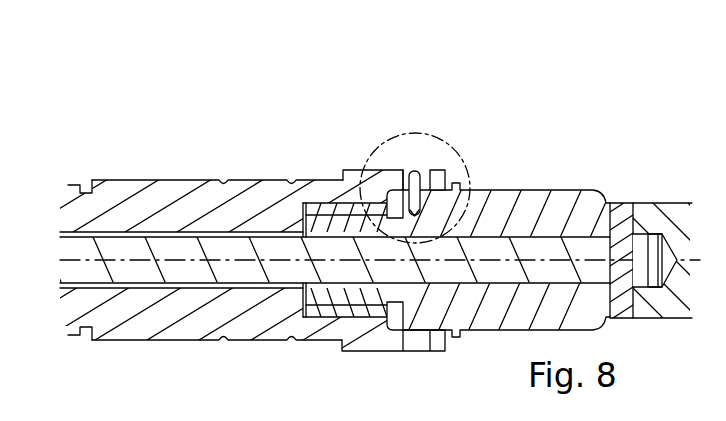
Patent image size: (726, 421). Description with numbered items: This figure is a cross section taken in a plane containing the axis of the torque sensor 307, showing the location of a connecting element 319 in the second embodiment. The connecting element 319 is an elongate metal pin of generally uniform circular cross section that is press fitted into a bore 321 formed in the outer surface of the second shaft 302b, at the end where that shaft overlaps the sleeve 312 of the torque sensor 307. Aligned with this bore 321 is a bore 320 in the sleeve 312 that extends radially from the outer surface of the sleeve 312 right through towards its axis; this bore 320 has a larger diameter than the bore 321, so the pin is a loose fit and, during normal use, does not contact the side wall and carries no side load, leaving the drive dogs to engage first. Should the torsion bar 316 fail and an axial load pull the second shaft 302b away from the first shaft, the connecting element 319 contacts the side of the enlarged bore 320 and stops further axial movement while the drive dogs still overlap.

The torque sensor 307 is at (247, 207).
The sleeve 312 is at (195, 180).
The torsion bar 316 is at (237, 236).
The connecting element 319 is at (420, 172).
The bore in the sleeve 320 is at (405, 172).
The bore in the second shaft 321 is at (476, 195).
The second shaft 302b is at (574, 190).